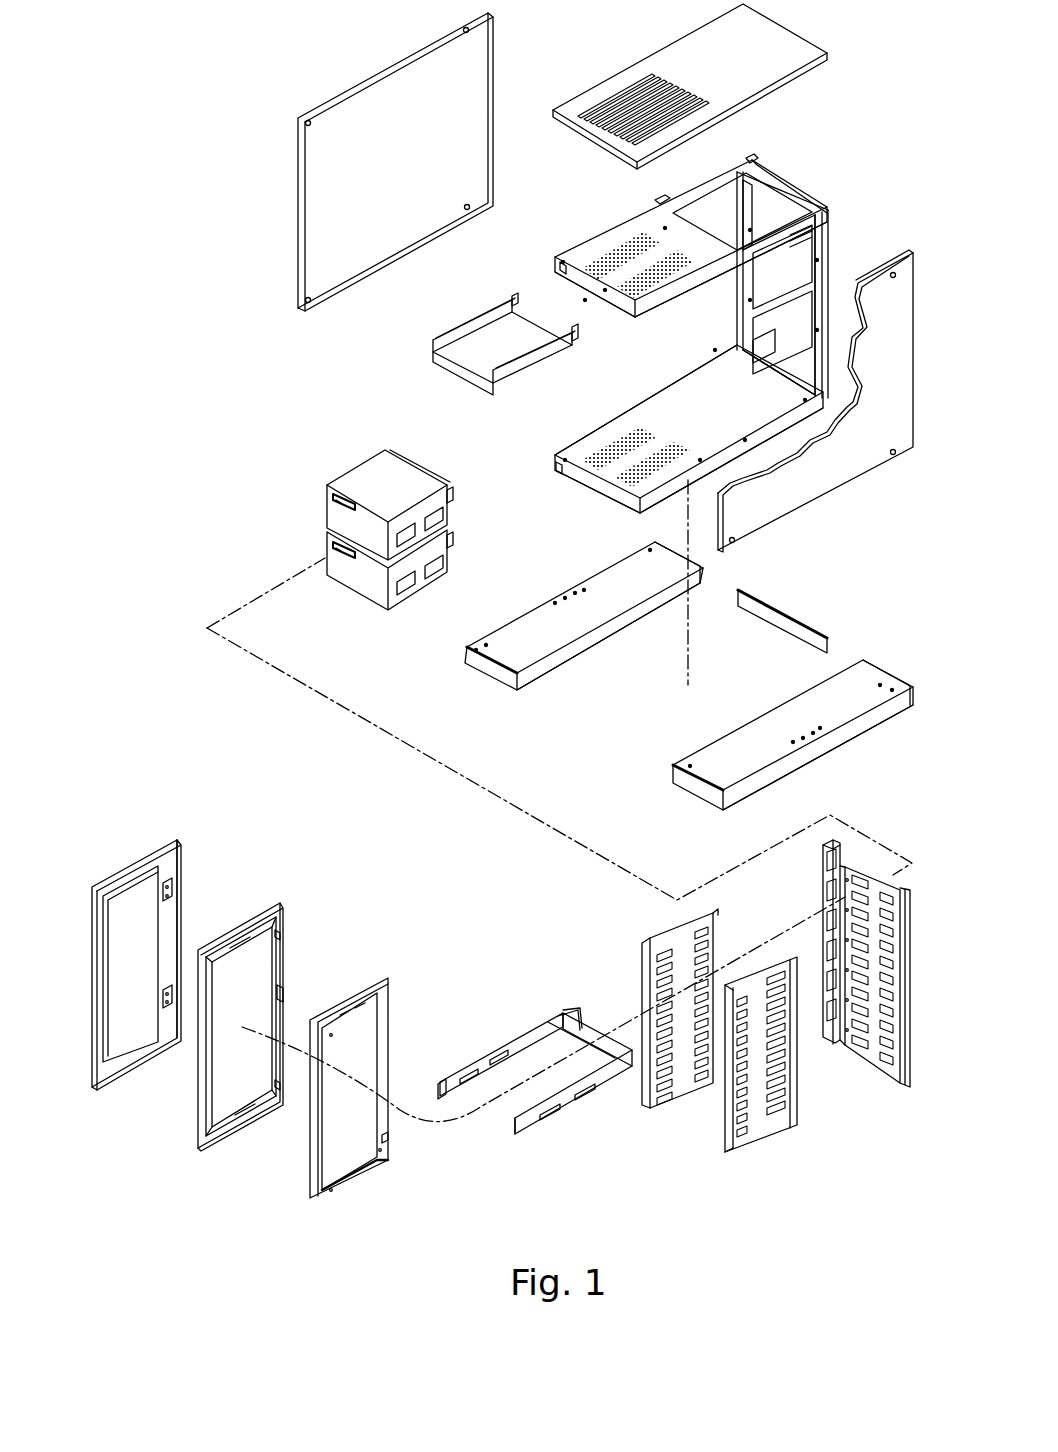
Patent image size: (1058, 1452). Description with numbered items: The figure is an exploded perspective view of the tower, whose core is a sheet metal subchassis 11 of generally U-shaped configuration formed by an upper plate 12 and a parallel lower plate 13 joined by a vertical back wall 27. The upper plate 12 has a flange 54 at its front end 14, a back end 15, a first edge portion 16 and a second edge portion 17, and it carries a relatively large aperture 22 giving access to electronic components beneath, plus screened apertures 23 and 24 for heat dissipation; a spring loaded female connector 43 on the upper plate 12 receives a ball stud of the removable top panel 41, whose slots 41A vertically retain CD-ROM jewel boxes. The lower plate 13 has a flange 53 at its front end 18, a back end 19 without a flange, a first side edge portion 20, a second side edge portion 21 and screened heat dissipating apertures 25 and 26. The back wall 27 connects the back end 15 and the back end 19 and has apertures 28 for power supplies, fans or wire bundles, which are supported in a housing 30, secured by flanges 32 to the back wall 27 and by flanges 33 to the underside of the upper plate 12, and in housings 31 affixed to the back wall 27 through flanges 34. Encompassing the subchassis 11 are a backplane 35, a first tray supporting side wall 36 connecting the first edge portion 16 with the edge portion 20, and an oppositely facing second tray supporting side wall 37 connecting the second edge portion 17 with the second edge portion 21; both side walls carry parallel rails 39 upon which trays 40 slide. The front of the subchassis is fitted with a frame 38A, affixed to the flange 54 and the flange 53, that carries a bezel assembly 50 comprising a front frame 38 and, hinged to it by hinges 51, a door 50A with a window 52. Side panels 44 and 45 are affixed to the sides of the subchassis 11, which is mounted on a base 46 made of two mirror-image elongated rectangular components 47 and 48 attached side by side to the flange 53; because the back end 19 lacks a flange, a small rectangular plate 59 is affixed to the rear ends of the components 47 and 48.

The sheet metal subchassis 11 is at (840, 228).
The upper plate 12 is at (683, 222).
The lower plate 13 is at (682, 436).
The front end 14 is at (600, 289).
The back end 15 is at (786, 267).
The first edge portion 16 is at (662, 198).
The second edge portion 17 is at (705, 273).
The front end 18 is at (568, 472).
The back end 19 is at (800, 386).
The first side edge portion 20 is at (640, 398).
The second side edge portion 21 is at (710, 460).
The aperture 22 is at (730, 222).
The aperture 23 is at (600, 258).
The aperture 24 is at (660, 270).
The screened heat dissipating aperture 25 is at (648, 437).
The screened heat dissipating aperture 26 is at (675, 455).
The vertical back wall 27 is at (818, 302).
The apertures 28 is at (770, 200).
The housing 30 is at (492, 348).
The housings 31 is at (327, 496).
The flanges 32 is at (516, 298).
The flanges 33 is at (445, 338).
The flanges 34 is at (453, 495).
The backplane 35 is at (910, 985).
The first tray supporting side wall 36 is at (669, 1027).
The second tray supporting side wall 37 is at (760, 1128).
The front frame 38 is at (388, 1168).
The frame 38A is at (283, 995).
The rails 39 is at (675, 1085).
The trays 40 is at (591, 1102).
The top panel 41 is at (690, 86).
The slots 41A is at (590, 110).
The spring loaded female connectors 43 is at (752, 158).
The side panel 44 is at (407, 182).
The side panel 45 is at (892, 428).
The base 46 is at (573, 655).
The base component 47 is at (637, 592).
The base component 48 is at (799, 733).
The bezel assembly 50 is at (210, 960).
The door 50A is at (178, 840).
The hinges 51 is at (178, 887).
The window 52 is at (145, 970).
The flange 53 is at (604, 492).
The flange 54 is at (566, 277).
The small rectangular plate 59 is at (800, 628).